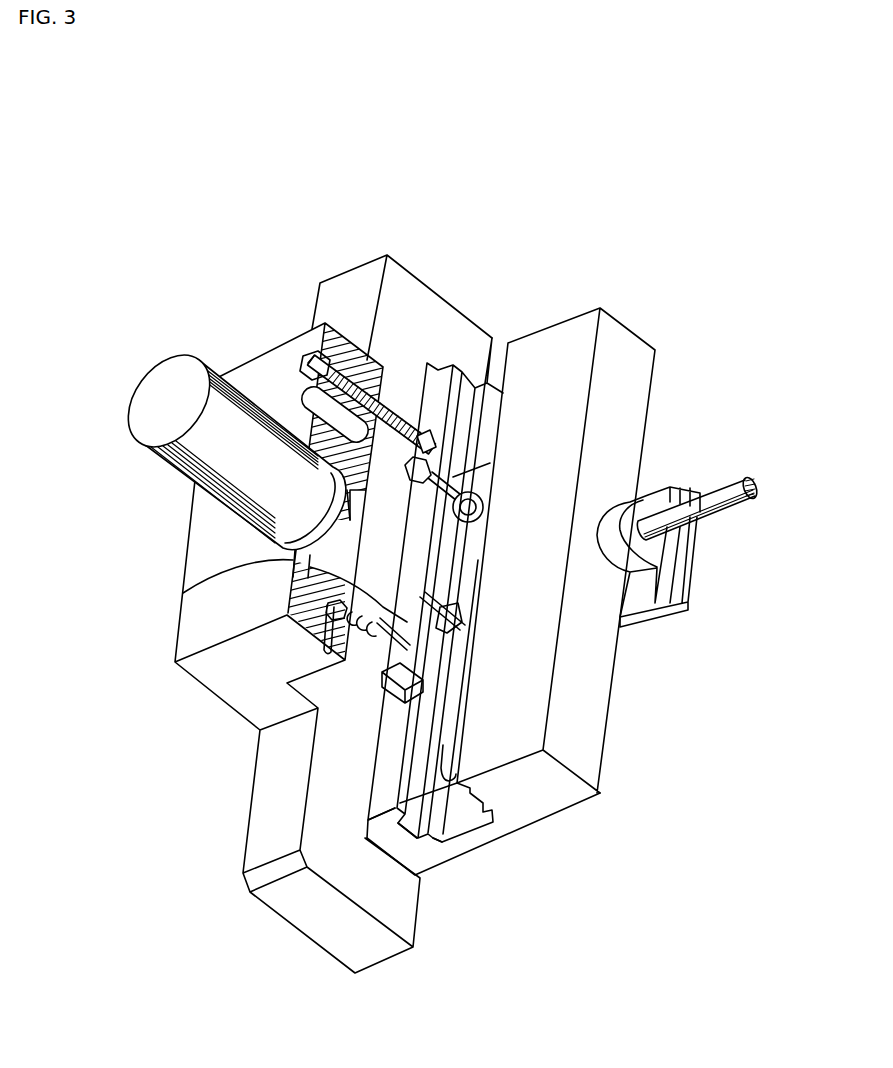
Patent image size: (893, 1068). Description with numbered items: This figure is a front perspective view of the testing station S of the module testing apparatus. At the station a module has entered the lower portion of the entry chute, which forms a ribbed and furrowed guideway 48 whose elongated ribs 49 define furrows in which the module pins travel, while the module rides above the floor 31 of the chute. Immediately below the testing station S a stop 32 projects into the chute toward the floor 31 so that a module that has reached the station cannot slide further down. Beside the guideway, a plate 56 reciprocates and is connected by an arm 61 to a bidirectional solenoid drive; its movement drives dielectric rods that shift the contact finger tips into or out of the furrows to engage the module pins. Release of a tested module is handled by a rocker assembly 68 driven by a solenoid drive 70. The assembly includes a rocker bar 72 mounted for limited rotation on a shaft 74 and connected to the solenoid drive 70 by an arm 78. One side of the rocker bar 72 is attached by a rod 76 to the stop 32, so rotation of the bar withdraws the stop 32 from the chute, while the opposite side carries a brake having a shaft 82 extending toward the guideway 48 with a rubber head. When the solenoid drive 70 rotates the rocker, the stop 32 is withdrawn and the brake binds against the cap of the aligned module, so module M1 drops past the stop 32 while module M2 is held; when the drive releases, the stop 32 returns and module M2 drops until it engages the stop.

The floor 31 is at (460, 817).
The stop 32 is at (452, 750).
The guideway 48 is at (527, 815).
The ribs 49 is at (495, 778).
The plate 56 is at (652, 606).
The arm 61 is at (658, 547).
The rocker assembly 68 is at (287, 320).
The solenoid drive 70 is at (167, 463).
The rocker bar 72 is at (440, 433).
The shaft 74 is at (437, 540).
The rod 76 is at (458, 615).
The arm 78 is at (183, 593).
The shaft 82 is at (490, 463).
The testing station S is at (528, 289).
The module M1 is at (452, 592).
The module M2 is at (483, 490).